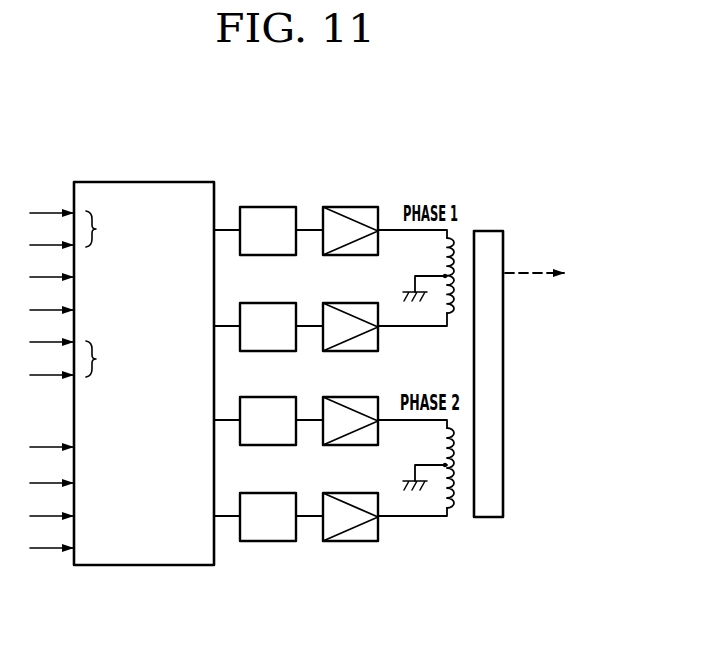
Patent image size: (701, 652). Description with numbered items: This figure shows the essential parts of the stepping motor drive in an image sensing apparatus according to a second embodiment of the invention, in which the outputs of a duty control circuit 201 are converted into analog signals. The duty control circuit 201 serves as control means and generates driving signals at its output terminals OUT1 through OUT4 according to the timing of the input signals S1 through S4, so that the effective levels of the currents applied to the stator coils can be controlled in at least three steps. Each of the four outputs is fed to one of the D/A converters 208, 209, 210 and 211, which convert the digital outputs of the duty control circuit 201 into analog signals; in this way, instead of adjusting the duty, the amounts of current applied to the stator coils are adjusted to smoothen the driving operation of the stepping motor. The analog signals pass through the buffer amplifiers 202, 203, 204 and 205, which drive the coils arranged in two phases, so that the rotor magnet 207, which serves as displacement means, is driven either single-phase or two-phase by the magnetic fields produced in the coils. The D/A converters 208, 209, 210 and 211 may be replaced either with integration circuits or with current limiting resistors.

The duty control circuit 201 is at (188, 182).
The buffer amplifier 202 is at (362, 207).
The buffer amplifier 203 is at (362, 303).
The buffer amplifier 204 is at (362, 397).
The buffer amplifier 205 is at (362, 493).
The rotor magnet 207 is at (489, 231).
The D/A converter 208 is at (277, 207).
The D/A converter 209 is at (277, 303).
The D/A converter 210 is at (277, 397).
The D/A converter 211 is at (277, 493).